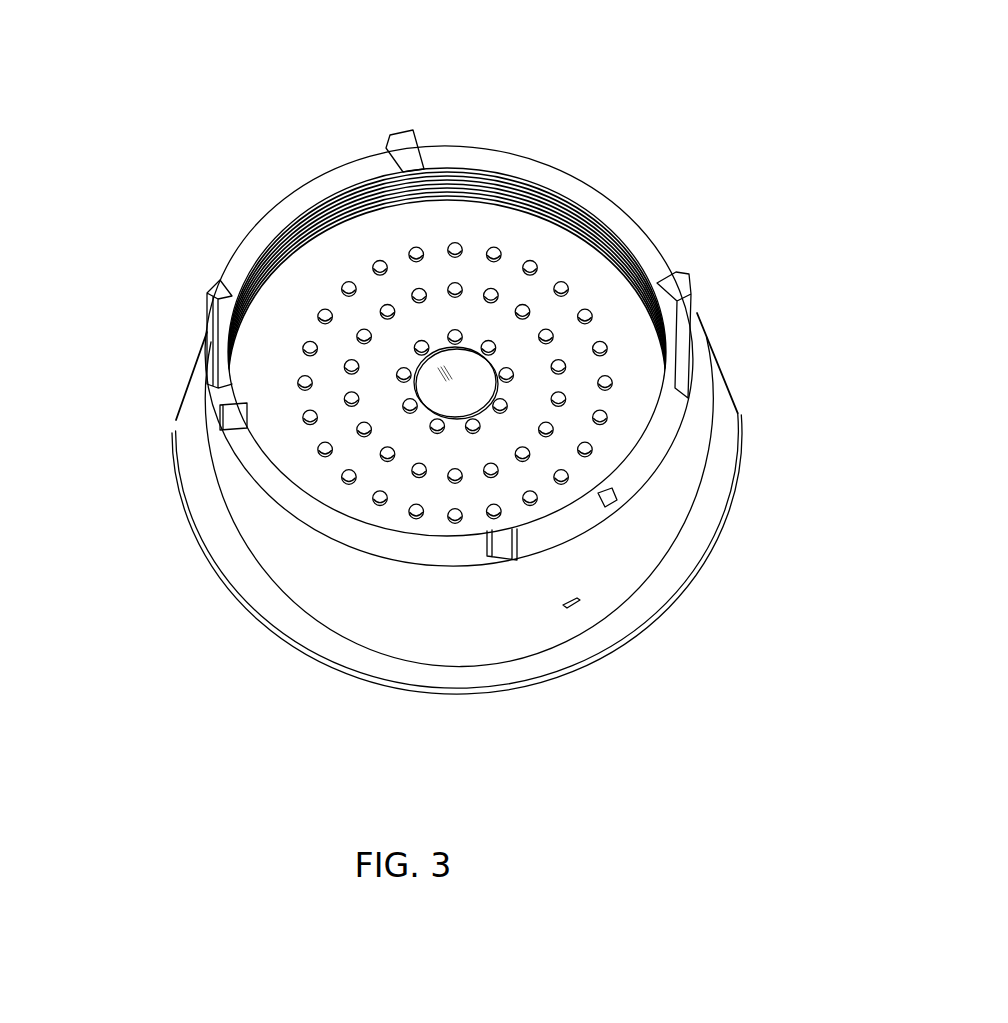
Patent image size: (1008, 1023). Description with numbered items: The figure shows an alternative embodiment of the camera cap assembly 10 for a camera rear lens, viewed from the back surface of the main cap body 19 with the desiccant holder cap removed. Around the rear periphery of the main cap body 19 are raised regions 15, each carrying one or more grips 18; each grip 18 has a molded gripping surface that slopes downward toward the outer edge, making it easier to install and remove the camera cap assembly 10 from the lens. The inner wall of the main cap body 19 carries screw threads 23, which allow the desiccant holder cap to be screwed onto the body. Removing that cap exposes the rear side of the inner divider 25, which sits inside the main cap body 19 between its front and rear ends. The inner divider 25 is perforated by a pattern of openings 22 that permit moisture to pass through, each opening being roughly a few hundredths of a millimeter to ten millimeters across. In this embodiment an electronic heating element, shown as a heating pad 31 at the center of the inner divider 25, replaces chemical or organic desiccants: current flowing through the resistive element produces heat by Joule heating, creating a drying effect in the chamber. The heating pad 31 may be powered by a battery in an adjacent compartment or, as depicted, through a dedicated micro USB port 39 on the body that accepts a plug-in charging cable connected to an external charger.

The camera cap assembly 10 is at (369, 591).
The raised region 15 is at (658, 442).
The grip 18 is at (690, 346).
The main cap body 19 is at (627, 553).
The openings 22 is at (465, 425).
The screw threads 23 is at (550, 192).
The inner divider 25 is at (261, 392).
The heating pad 31 is at (461, 373).
The micro USB port 39 is at (580, 612).